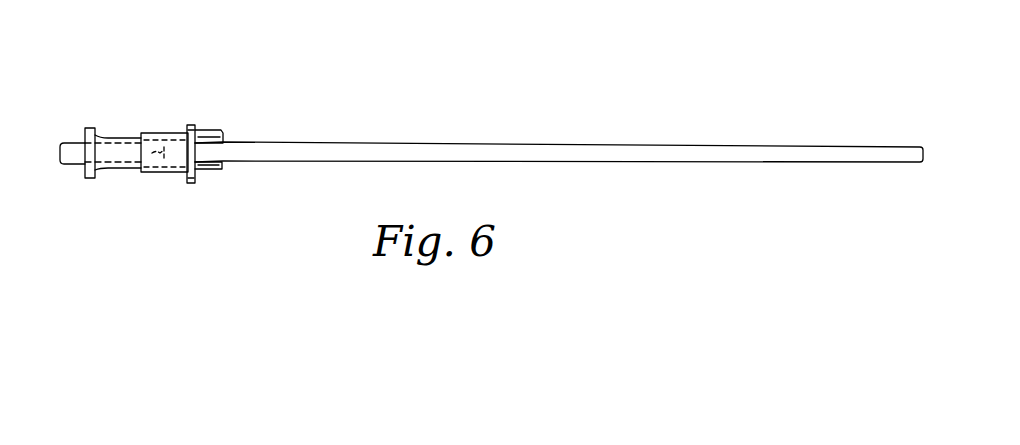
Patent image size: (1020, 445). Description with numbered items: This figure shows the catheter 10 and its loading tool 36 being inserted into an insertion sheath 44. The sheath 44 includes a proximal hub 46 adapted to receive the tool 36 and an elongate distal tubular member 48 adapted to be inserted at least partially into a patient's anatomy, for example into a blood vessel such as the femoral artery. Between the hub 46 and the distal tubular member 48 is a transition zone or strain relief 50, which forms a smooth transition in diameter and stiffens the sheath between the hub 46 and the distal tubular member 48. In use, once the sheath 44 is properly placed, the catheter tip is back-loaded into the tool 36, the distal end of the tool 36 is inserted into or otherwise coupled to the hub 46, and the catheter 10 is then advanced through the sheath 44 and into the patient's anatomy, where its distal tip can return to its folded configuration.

The catheter 10 is at (70, 165).
The tool 36 is at (113, 135).
The insertion sheath 44 is at (288, 118).
The proximal hub 46 is at (167, 133).
The elongate distal tubular member 48 is at (423, 140).
The transition zone 50 is at (222, 130).